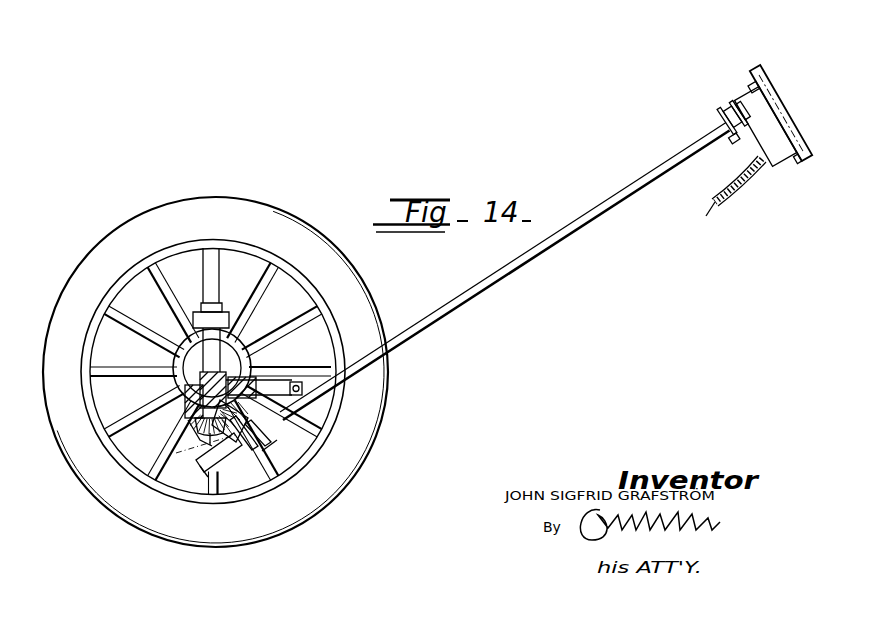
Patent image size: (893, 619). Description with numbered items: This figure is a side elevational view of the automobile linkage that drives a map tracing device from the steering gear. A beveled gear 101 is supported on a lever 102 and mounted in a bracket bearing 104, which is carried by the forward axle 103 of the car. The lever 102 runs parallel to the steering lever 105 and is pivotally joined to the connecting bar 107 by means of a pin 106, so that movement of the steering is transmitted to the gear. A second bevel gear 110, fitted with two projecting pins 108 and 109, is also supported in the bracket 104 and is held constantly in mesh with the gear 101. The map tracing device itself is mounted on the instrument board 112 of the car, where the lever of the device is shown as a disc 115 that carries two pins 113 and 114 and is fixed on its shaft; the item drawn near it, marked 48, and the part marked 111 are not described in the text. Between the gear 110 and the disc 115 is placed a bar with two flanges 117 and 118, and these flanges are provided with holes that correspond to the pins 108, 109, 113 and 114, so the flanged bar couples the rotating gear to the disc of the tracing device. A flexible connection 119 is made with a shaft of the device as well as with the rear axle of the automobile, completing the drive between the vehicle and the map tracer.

The control body 48 is at (746, 116).
The beveled gear 101 is at (188, 412).
The lever 102 is at (262, 385).
The forward axle 103 is at (196, 375).
The bracket bearing 104 is at (200, 452).
The steering lever 105 is at (292, 386).
The pin 106 is at (308, 402).
The connecting bar 107 is at (338, 352).
The projecting pin 108 is at (290, 456).
The projecting pin 109 is at (262, 433).
The bevel gear 110 is at (250, 472).
The coupling 111 is at (742, 99).
The instrument board 112 is at (769, 72).
The pin 113 is at (727, 142).
The pin 114 is at (724, 121).
The disc 115 is at (745, 125).
The flange 117 is at (282, 468).
The flange 118 is at (731, 116).
The flexible connection 119 is at (707, 215).